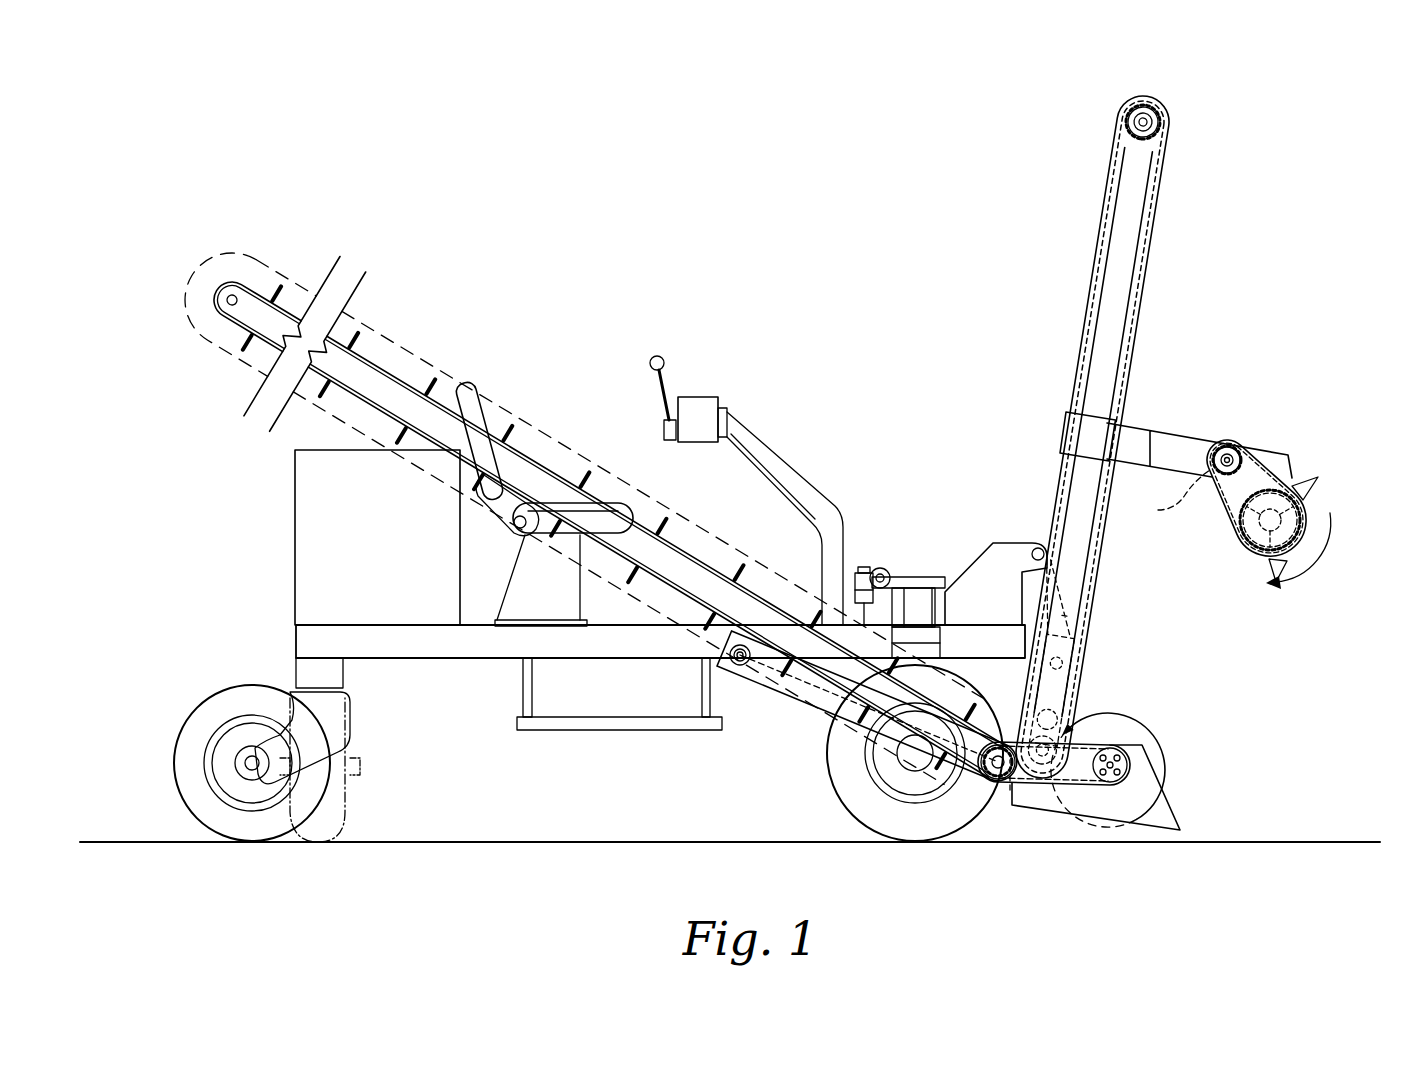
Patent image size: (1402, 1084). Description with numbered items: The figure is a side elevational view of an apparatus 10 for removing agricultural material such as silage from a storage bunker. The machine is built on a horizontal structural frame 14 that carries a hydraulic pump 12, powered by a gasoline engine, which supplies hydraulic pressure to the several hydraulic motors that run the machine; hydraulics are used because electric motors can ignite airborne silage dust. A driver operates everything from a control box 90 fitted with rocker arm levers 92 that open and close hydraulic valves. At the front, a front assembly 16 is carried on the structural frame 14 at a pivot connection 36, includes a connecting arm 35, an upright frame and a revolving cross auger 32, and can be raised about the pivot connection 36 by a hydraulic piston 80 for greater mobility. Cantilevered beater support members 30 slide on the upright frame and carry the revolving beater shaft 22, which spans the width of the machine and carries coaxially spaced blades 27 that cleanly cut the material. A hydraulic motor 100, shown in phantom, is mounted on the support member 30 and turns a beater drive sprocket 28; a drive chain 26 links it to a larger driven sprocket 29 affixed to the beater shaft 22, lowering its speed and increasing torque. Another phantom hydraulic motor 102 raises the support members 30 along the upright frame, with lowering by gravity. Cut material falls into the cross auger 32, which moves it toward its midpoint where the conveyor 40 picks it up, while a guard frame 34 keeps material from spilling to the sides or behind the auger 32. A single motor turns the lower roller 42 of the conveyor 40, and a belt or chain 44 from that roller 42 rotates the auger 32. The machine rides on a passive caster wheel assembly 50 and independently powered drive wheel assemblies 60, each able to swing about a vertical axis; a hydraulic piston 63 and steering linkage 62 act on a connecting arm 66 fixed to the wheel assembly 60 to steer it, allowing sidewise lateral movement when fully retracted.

The apparatus 10 is at (577, 212).
The hydraulic pump 12 is at (330, 528).
The structural frame 14 is at (318, 645).
The front assembly 16 is at (1315, 300).
The revolving beater shaft 22 is at (1278, 523).
The drive chain 26 is at (1230, 520).
The blades 27 is at (1290, 556).
The beater drive sprocket 28 is at (1237, 450).
The driven sprocket 29 is at (1282, 458).
The beater support members 30 is at (1170, 447).
The cross auger 32 is at (1162, 762).
The guard frame 34 is at (1153, 812).
The connecting arm 35 is at (778, 665).
The pivot connection 36 is at (740, 668).
The conveyor 40 is at (400, 352).
The lower roller 42 is at (988, 782).
The belt or chain 44 is at (1062, 792).
The passive caster wheel assembly 50 is at (280, 740).
The drive wheel assembly 60 is at (905, 792).
The steering linkage 62 is at (857, 570).
The hydraulic piston 63 is at (882, 567).
The connecting arm 66 is at (925, 577).
The hydraulic piston 80 is at (1040, 582).
The control box 90 is at (706, 400).
The rocker arm levers 92 is at (657, 355).
The hydraulic motor 100 is at (1162, 496).
The hydraulic motor 102 is at (1010, 790).